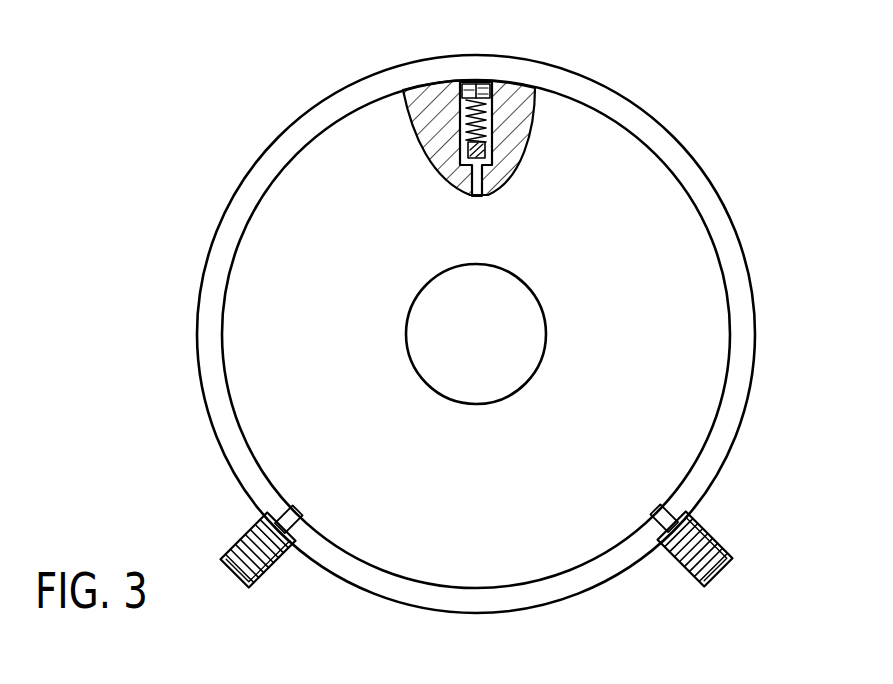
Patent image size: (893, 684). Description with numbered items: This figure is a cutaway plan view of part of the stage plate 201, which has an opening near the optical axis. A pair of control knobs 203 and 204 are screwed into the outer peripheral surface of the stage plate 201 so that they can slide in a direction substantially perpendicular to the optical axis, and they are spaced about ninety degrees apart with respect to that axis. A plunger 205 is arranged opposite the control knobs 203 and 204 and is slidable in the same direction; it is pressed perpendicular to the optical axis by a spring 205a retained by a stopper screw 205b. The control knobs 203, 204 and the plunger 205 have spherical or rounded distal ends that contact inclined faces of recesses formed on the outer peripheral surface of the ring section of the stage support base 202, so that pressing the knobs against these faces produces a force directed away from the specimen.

The stage plate 201 is at (253, 260).
The stage support base 202 is at (197, 361).
The control knob 203 is at (246, 545).
The control knob 204 is at (707, 543).
The plunger 205 is at (471, 113).
The spring 205a is at (460, 118).
The stopper screw 205b is at (503, 83).